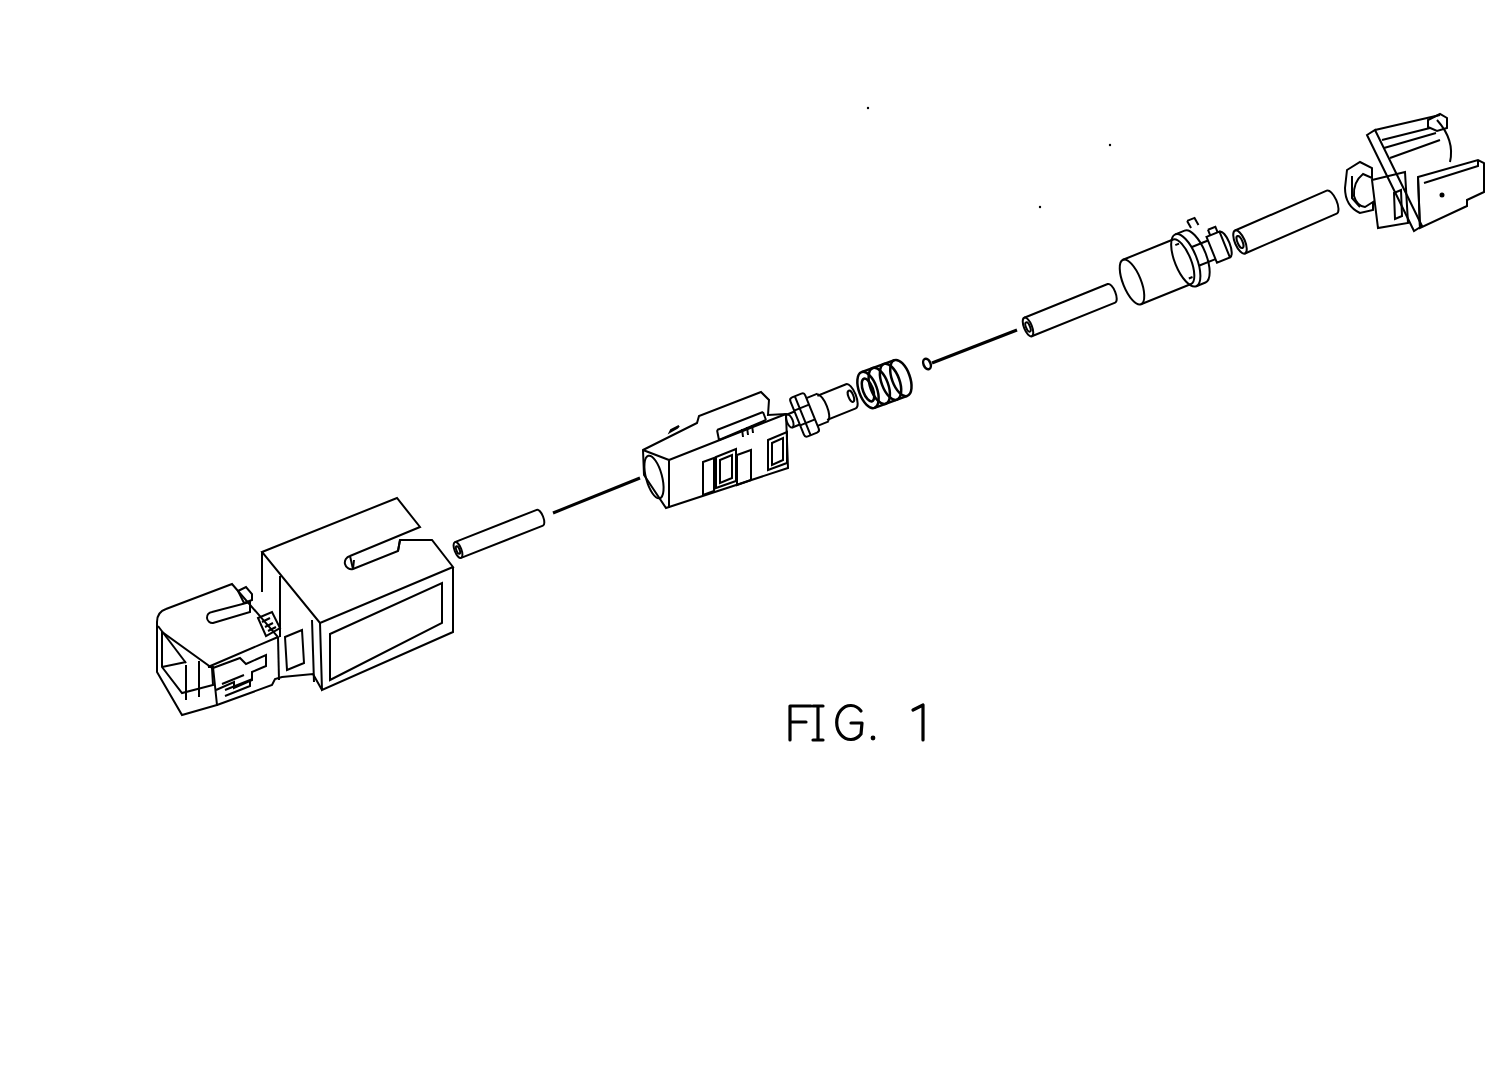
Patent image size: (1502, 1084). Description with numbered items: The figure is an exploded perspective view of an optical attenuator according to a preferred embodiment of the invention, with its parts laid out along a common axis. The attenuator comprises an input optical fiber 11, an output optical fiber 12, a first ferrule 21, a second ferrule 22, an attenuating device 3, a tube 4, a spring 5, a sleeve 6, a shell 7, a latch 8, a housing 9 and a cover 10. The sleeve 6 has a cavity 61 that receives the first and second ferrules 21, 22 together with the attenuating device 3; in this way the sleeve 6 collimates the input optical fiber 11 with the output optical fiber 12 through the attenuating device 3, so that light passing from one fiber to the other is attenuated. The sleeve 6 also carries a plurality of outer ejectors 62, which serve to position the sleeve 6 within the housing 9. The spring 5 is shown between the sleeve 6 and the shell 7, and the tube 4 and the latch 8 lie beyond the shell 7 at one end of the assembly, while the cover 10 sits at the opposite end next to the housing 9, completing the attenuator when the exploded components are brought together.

The cover 10 is at (332, 533).
The second ferrule 22 is at (508, 528).
The output optical fiber 12 is at (592, 497).
The housing 9 is at (695, 432).
The sleeve 6 is at (844, 415).
The cavity 61 is at (797, 432).
The outer ejectors 62 is at (830, 420).
The spring 5 is at (887, 360).
The attenuating device 3 is at (924, 358).
The input optical fiber 11 is at (973, 348).
The first ferrule 21 is at (1088, 300).
The shell 7 is at (1162, 250).
The tube 4 is at (1300, 208).
The latch 8 is at (1417, 128).